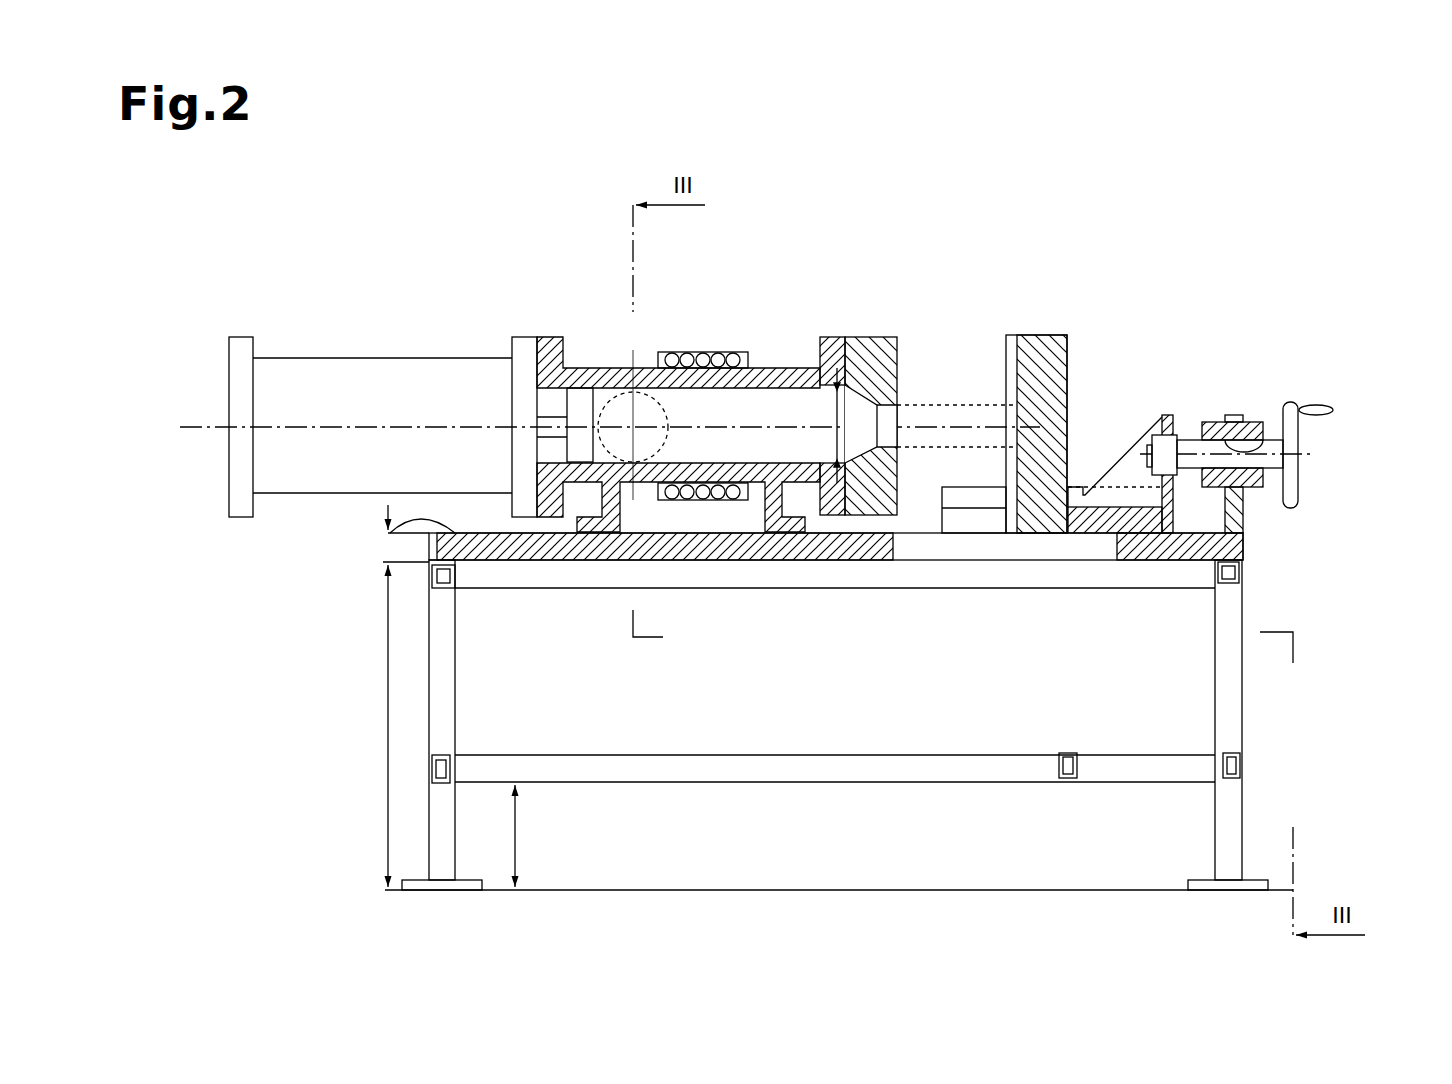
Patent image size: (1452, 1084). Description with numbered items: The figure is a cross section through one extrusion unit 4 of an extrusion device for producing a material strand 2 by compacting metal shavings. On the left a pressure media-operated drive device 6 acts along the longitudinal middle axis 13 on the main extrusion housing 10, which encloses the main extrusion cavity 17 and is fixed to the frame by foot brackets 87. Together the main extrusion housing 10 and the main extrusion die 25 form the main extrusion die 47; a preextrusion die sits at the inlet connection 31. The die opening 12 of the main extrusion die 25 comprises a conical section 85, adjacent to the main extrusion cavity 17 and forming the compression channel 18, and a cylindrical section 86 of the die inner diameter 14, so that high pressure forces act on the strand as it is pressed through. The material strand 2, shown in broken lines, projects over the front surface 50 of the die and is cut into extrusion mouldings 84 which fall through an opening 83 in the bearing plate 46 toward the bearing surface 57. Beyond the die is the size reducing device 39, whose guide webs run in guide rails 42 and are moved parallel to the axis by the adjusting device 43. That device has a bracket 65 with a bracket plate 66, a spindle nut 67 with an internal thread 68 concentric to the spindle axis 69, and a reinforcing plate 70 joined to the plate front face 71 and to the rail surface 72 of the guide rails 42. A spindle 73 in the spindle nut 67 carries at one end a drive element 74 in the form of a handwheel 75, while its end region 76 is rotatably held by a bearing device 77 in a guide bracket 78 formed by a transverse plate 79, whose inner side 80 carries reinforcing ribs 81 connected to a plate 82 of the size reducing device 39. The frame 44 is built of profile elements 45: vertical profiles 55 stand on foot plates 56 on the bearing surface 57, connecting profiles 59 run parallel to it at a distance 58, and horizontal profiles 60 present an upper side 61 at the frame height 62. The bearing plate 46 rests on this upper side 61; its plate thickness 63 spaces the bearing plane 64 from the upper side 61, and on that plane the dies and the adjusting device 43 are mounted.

The material strand 2 is at (985, 404).
The extrusion unit 4 is at (495, 240).
The drive device 6 is at (398, 250).
The main extrusion housing 10 is at (590, 386).
The die opening 12 is at (906, 418).
The longitudinal middle axis 13 is at (382, 425).
The die inner diameter 14 is at (830, 437).
The main extrusion cavity 17 is at (703, 403).
The compression channel 18 is at (832, 408).
The main extrusion die 25 is at (850, 318).
The inlet connection 31 is at (615, 395).
The size reducing device 39 is at (1040, 318).
The guide rails 42 is at (970, 487).
The adjusting device 43 is at (1235, 240).
The frame 44 is at (368, 624).
The profile elements 45 is at (1088, 792).
The bearing plate 46 is at (518, 552).
The main extrusion die 47 is at (698, 312).
The front surface 50 is at (897, 355).
The vertical profiles 55 is at (435, 715).
The foot plates 56 is at (467, 880).
The bearing surface 57 is at (708, 885).
The distance 58 is at (517, 830).
The connecting profiles 59 is at (433, 765).
The horizontal profiles 60 is at (443, 586).
The upper side 61 is at (462, 575).
The frame height 62 is at (387, 647).
The plate thickness 63 is at (386, 556).
The bearing plane 64 is at (388, 545).
The bracket 65 is at (1240, 403).
The bracket plate 66 is at (1243, 510).
The spindle nut 67 is at (1243, 500).
The internal thread 68 is at (1252, 476).
The spindle axis 69 is at (1292, 450).
The reinforcing plate 70 is at (1213, 417).
The plate front face 71 is at (1213, 520).
The rail surface 72 is at (1076, 505).
The spindle 73 is at (1168, 437).
The drive element 74 is at (1332, 416).
The handwheel 75 is at (1312, 462).
The end region 76 is at (1140, 418).
The bearing device 77 is at (1160, 437).
The guide bracket 78 is at (1137, 530).
The transverse plate 79 is at (1140, 545).
The inner side 80 is at (1113, 537).
The reinforcing ribs 81 is at (1120, 470).
The plate 82 is at (1083, 537).
The opening 83 is at (955, 570).
The extrusion mouldings 84 is at (947, 404).
The conical section 85 is at (855, 470).
The cylindrical section 86 is at (885, 454).
The foot brackets 87 is at (630, 513).